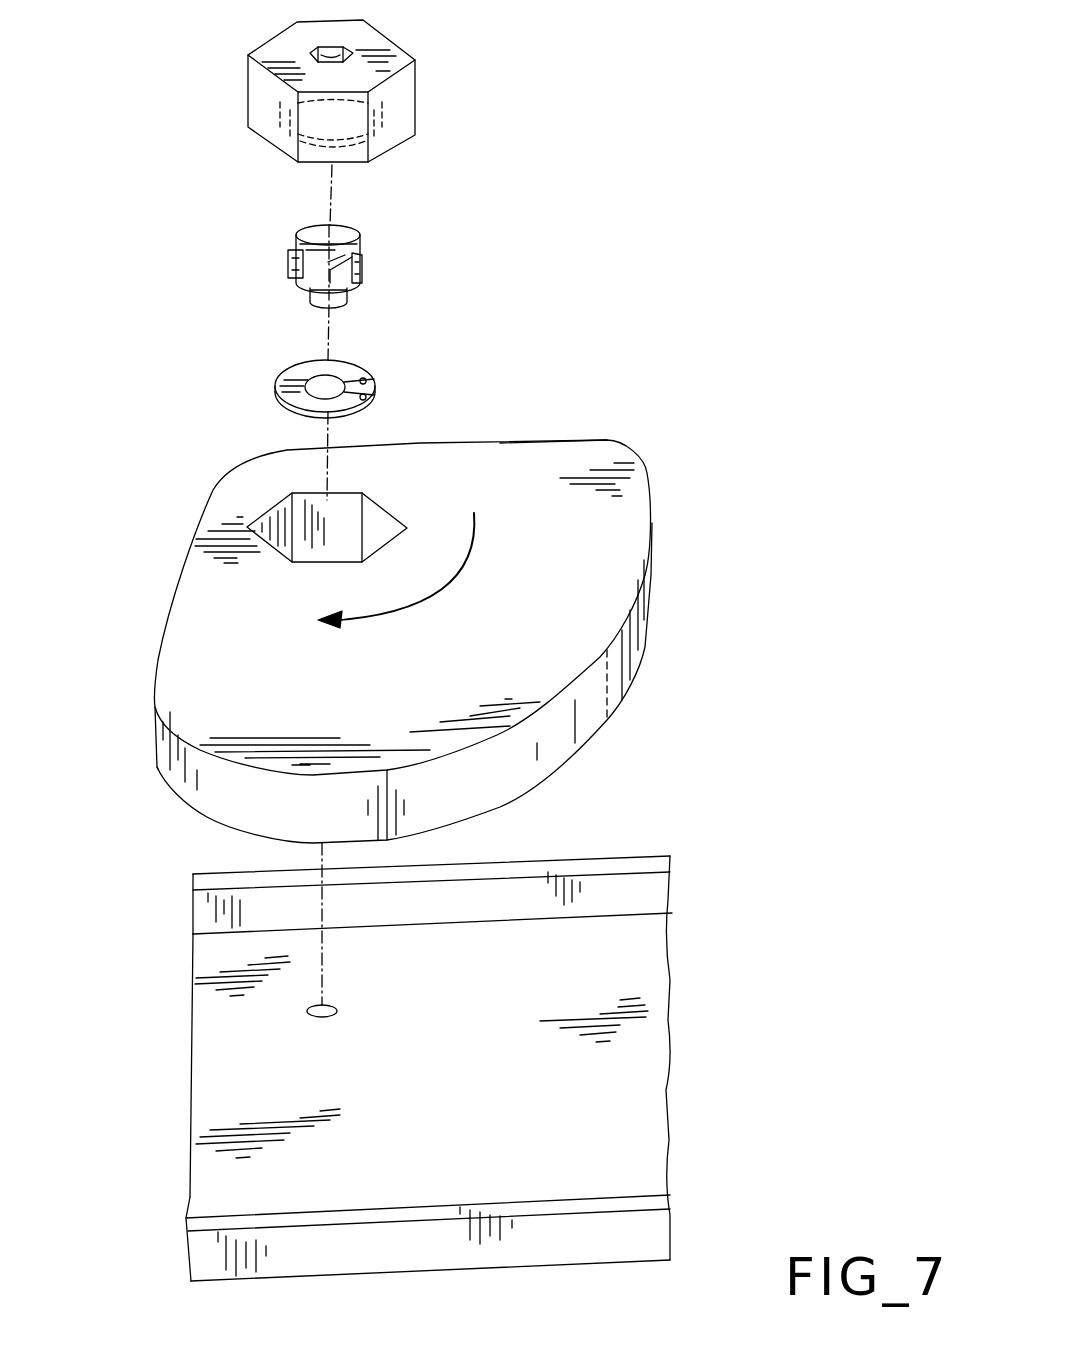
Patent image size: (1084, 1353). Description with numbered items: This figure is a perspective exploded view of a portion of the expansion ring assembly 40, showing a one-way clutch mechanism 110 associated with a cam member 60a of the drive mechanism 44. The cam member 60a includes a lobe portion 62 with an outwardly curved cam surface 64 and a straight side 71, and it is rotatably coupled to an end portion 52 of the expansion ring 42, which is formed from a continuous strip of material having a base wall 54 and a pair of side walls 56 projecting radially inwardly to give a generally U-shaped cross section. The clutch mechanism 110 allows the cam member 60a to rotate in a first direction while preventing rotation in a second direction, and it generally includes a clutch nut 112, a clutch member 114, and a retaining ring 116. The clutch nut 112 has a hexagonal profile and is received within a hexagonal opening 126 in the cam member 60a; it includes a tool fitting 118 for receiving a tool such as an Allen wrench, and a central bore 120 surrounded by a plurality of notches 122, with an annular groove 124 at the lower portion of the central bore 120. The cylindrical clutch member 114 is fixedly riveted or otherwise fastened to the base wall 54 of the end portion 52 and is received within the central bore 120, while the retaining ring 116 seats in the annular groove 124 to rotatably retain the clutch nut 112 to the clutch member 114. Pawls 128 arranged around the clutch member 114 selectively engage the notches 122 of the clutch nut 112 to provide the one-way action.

The clutch mechanism 110 is at (155, 331).
The clutch nut 112 is at (441, 76).
The clutch member 114 is at (381, 248).
The retaining ring 116 is at (352, 363).
The tool fitting 118 is at (350, 52).
The central bore 120 is at (320, 122).
The notches 122 is at (383, 133).
The annular groove 124 is at (317, 138).
The hexagonal opening 126 is at (349, 514).
The pawls 128 is at (288, 266).
The drive mechanism 44 is at (452, 491).
The expansion ring assembly 40 is at (680, 208).
The cam member 60a is at (647, 421).
The lobe portion 62 is at (206, 669).
The cam surface 64 is at (217, 793).
The straight side 71 is at (487, 442).
The end portions 52 is at (462, 1036).
The expansion ring 42 is at (620, 846).
The base wall 54 is at (447, 1034).
The side walls 56 is at (652, 890).